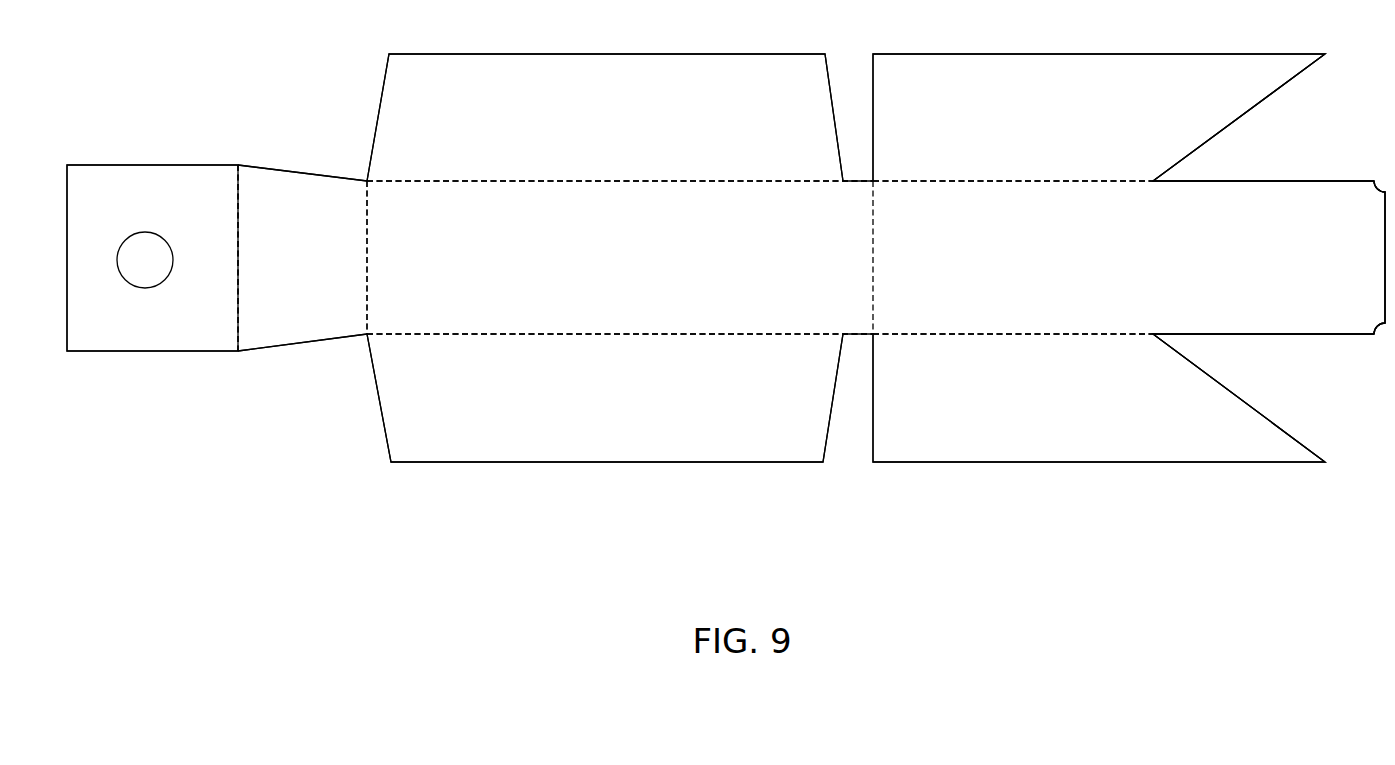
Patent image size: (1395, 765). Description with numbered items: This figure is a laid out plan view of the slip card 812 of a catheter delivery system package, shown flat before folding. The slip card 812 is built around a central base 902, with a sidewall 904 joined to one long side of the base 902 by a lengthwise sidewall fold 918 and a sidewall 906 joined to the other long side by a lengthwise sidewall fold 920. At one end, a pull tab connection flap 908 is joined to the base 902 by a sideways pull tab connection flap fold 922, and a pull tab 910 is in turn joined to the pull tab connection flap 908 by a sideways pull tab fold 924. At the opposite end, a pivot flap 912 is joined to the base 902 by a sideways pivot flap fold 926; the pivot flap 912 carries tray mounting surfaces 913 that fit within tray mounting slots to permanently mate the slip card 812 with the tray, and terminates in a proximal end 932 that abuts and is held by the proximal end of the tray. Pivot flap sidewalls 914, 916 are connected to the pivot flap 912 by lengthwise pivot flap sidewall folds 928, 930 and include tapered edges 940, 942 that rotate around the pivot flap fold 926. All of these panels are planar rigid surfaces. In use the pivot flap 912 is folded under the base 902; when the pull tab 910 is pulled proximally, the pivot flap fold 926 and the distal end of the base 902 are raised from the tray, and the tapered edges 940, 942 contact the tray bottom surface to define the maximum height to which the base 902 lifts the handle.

The slip card 812 is at (467, 518).
The base 902 is at (632, 275).
The sidewall 904 is at (627, 411).
The sidewall 906 is at (627, 135).
The pull tab connection flap 908 is at (322, 278).
The pull tab 910 is at (166, 330).
The pivot flap 912 is at (1192, 275).
The tray mounting surfaces 913 is at (1300, 181).
The pivot flap sidewall 914 is at (1057, 408).
The pivot flap sidewall 916 is at (1057, 130).
The lengthwise sidewall fold 918 is at (688, 334).
The lengthwise sidewall fold 920 is at (670, 181).
The sideways pull tab connection flap fold 922 is at (367, 250).
The sideways pull tab fold 924 is at (239, 192).
The sideways pivot flap fold 926 is at (873, 243).
The lengthwise pivot flap sidewall fold 928 is at (1005, 334).
The lengthwise pivot flap sidewall fold 930 is at (1083, 181).
The proximal end 932 is at (1385, 255).
The tapered edge 940 is at (1225, 387).
The tapered edge 942 is at (1210, 139).